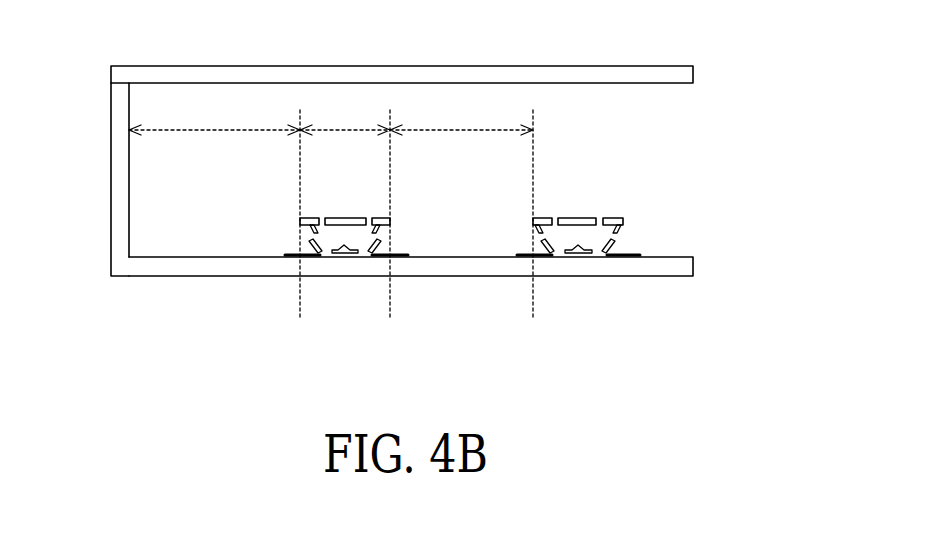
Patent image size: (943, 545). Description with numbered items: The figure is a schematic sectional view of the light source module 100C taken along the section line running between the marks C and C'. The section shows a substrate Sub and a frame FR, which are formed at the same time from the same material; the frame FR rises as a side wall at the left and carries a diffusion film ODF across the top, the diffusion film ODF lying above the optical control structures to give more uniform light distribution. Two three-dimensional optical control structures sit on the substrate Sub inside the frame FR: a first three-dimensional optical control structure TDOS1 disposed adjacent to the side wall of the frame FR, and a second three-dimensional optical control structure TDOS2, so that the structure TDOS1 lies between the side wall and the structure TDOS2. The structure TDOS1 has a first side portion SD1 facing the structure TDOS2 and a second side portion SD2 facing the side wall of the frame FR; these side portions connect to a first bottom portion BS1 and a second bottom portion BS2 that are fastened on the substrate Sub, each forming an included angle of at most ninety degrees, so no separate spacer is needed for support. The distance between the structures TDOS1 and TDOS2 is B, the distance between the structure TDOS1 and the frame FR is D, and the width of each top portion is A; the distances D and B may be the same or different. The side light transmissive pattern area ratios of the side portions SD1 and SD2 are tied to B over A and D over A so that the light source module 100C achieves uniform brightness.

The light source module 100C is at (777, 425).
The diffusion film ODF is at (690, 75).
The frame FR is at (127, 193).
The substrate Sub is at (683, 265).
The first three-dimensional optical control structure TDOS1 is at (345, 242).
The second three-dimensional optical control structure TDOS2 is at (572, 249).
The first side portion SD1 is at (391, 230).
The second side portion SD2 is at (303, 230).
The first bottom portion BS1 is at (622, 259).
The second bottom portion BS2 is at (527, 259).
The distance D is at (214, 117).
The width A is at (339, 116).
The distance B is at (455, 116).
The section line C-C' end C is at (105, 351).
The section line C-C' end C' is at (692, 349).